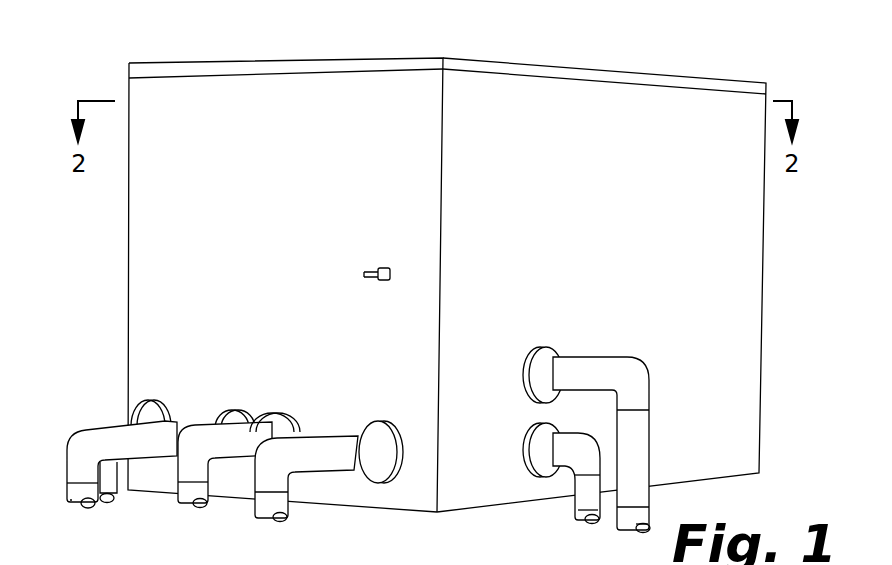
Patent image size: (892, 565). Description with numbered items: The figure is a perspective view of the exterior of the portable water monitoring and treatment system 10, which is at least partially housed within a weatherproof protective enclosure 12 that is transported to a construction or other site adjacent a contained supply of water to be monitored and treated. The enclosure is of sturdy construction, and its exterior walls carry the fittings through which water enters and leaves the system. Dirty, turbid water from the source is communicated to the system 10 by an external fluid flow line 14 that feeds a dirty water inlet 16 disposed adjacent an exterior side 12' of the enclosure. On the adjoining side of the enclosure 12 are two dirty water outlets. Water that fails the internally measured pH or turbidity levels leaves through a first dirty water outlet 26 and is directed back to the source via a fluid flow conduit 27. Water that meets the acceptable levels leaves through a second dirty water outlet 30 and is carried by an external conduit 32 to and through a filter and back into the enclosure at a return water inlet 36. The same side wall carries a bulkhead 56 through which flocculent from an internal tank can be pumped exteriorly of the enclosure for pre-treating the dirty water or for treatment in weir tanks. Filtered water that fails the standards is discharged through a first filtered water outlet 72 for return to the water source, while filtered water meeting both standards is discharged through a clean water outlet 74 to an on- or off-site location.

The portable water monitoring and treatment system 10 is at (652, 64).
The protective enclosure 12 is at (442, 285).
The exterior side of the protective enclosure 12' is at (631, 285).
The external fluid flow line 14 is at (585, 513).
The dirty water inlet 16 is at (576, 445).
The first dirty water outlet 26 is at (217, 428).
The fluid flow conduit 27 is at (77, 496).
The second dirty water outlet 30 is at (119, 416).
The external conduit 32 is at (630, 518).
The return water inlet 36 is at (587, 355).
The bulkhead 56 is at (383, 270).
The first filtered water outlet 72 is at (352, 443).
The clean water outlet 74 is at (265, 430).